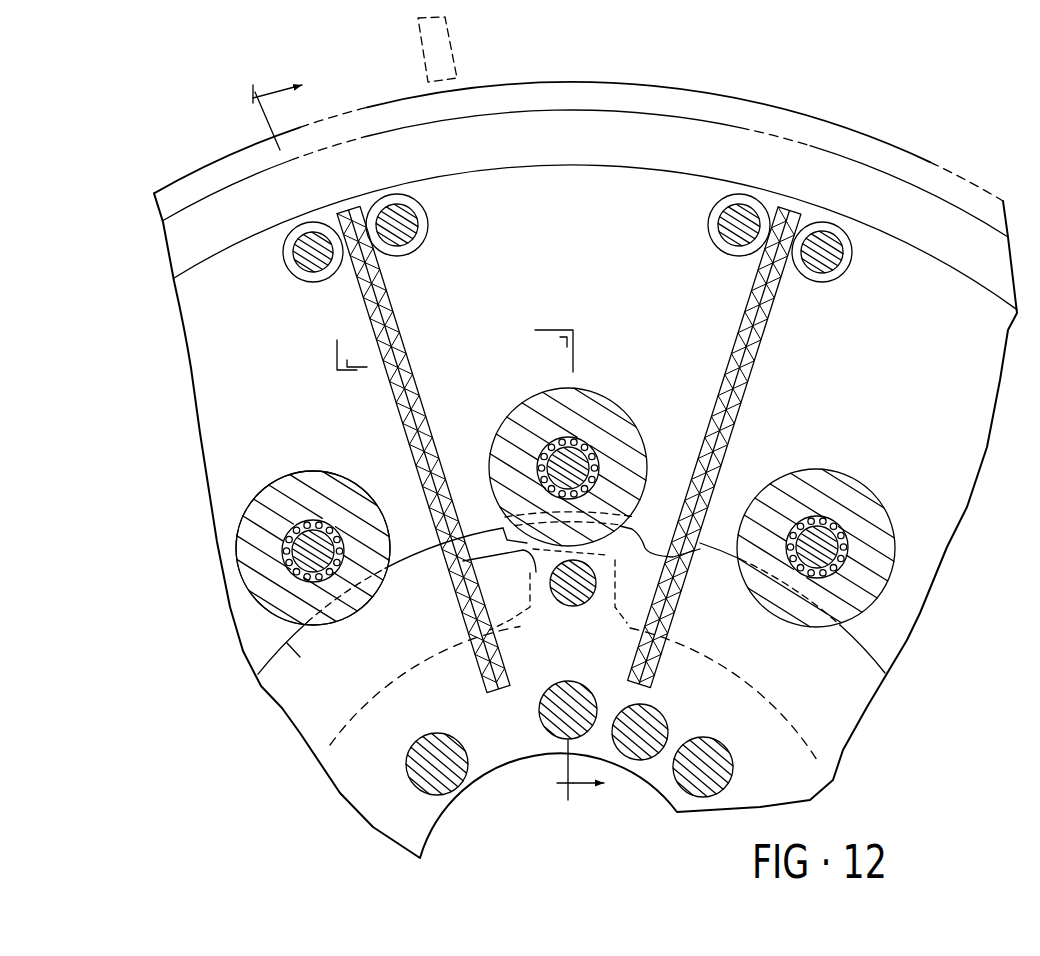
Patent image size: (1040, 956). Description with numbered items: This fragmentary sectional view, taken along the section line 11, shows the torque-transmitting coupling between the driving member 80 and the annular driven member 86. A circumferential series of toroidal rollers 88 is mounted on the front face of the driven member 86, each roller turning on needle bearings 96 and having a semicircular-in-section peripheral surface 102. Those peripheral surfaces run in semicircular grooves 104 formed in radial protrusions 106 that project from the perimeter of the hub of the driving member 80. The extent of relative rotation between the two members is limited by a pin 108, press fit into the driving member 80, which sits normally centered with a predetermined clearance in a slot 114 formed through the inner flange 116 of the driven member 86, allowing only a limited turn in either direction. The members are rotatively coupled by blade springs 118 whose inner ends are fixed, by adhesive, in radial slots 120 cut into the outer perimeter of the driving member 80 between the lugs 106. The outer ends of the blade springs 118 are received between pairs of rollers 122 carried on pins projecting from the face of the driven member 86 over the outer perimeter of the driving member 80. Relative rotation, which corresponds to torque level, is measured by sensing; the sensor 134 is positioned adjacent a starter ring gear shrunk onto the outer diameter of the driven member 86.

The section line 11- 11 is at (445, 436).
The driving member 80 is at (390, 752).
The annular driven member 86 is at (268, 405).
The rollers 88 is at (252, 502).
The needle bearings 96 is at (583, 440).
The peripheral surface 102 is at (340, 474).
The semicircular grooves 104 is at (340, 620).
The radial protrusions 106 is at (299, 658).
The pin 108 is at (563, 607).
The slot 114 is at (478, 512).
The inner flange 116 is at (335, 713).
The blade springs 118 is at (363, 302).
The radial slots 120 is at (672, 608).
The rollers 122 is at (282, 240).
The sensor 134 is at (450, 32).